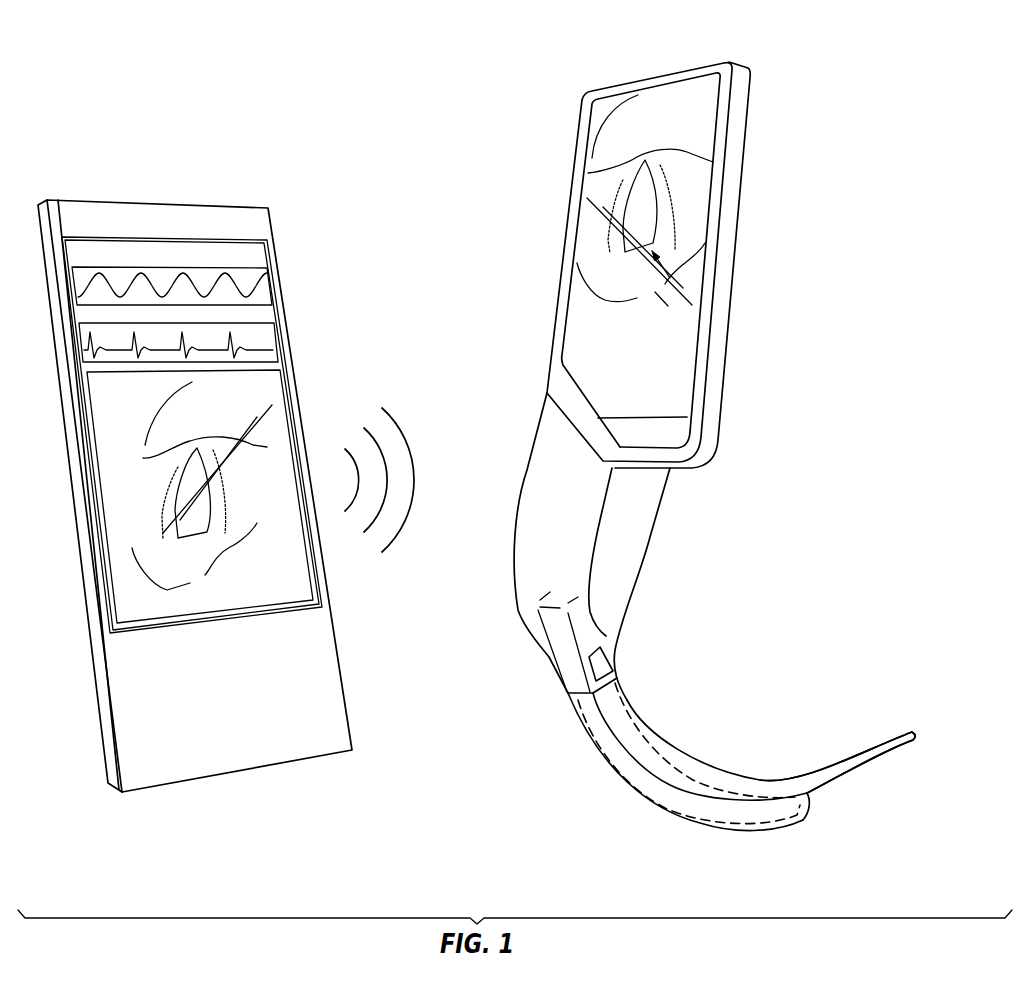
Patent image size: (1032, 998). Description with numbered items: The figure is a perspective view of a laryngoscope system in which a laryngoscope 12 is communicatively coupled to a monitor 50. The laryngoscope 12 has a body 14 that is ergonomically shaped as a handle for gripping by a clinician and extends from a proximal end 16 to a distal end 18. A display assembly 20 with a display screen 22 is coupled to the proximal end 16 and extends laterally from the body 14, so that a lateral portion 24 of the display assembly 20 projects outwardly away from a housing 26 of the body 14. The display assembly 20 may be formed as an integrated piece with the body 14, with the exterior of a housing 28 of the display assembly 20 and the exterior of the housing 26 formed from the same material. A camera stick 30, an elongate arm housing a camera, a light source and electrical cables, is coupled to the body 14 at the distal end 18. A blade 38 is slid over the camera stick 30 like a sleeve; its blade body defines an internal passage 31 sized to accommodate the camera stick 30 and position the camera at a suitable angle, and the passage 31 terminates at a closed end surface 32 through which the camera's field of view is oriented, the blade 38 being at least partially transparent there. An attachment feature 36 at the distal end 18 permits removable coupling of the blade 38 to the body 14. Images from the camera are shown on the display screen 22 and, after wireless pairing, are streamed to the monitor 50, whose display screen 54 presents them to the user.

The laryngoscope 12 is at (682, 449).
The body 14 is at (569, 546).
The proximal end 16 is at (629, 283).
The distal end 18 is at (707, 771).
The display assembly 20 is at (629, 260).
The display screen 22 is at (672, 296).
The lateral portion 24 is at (677, 432).
The housing 26 is at (650, 547).
The housing 28 is at (734, 265).
The camera stick 30 is at (741, 814).
The passage 31 is at (626, 765).
The closed end surface 32 is at (814, 812).
The attachment feature 36 is at (605, 652).
The blade 38 is at (832, 764).
The monitor 50 is at (195, 470).
The display screen 54 is at (293, 410).